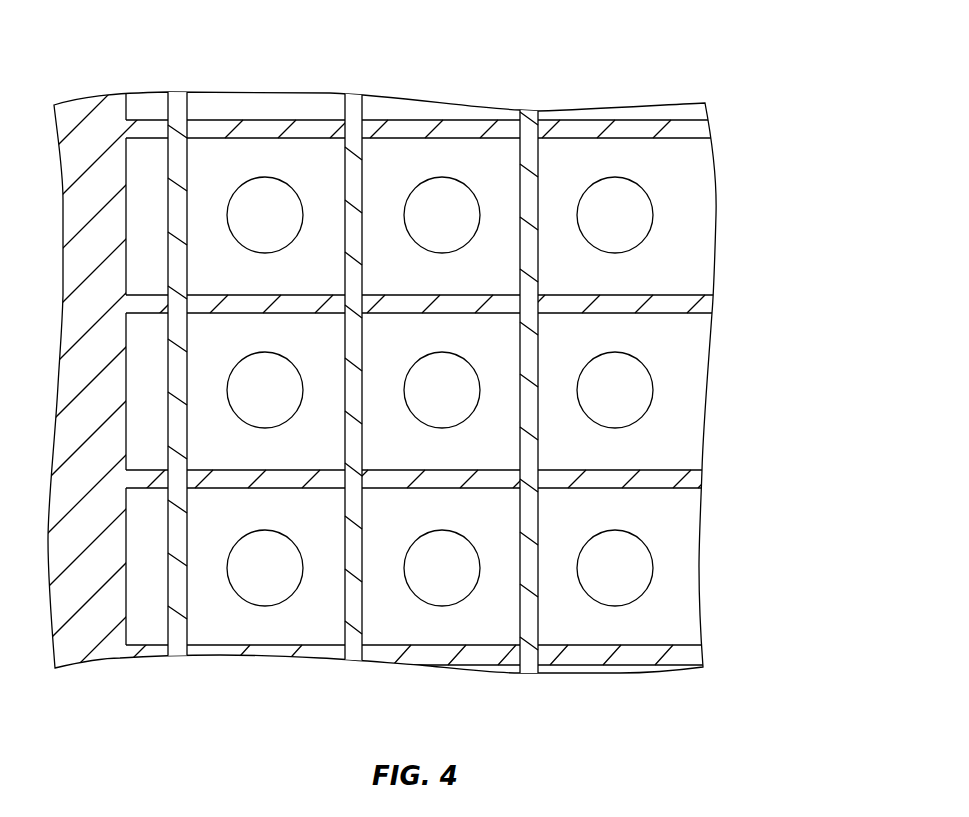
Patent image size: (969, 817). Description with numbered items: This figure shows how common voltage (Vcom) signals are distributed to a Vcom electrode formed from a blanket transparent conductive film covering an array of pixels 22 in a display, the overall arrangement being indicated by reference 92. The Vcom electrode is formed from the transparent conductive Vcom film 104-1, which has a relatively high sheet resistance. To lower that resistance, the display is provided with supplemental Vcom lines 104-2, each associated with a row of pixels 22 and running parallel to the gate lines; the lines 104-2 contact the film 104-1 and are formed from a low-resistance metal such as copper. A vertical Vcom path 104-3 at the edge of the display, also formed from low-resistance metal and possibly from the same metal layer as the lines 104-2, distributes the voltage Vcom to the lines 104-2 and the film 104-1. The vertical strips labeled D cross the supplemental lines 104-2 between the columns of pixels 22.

The light guide panel assembly 92 is at (779, 154).
The pixels 22 is at (292, 242).
The Vcom film 104-1 is at (590, 677).
The supplemental Vcom lines 104-2 is at (698, 128).
The vertical Vcom path 104-3 is at (127, 695).
The vertical dividers D is at (182, 108).